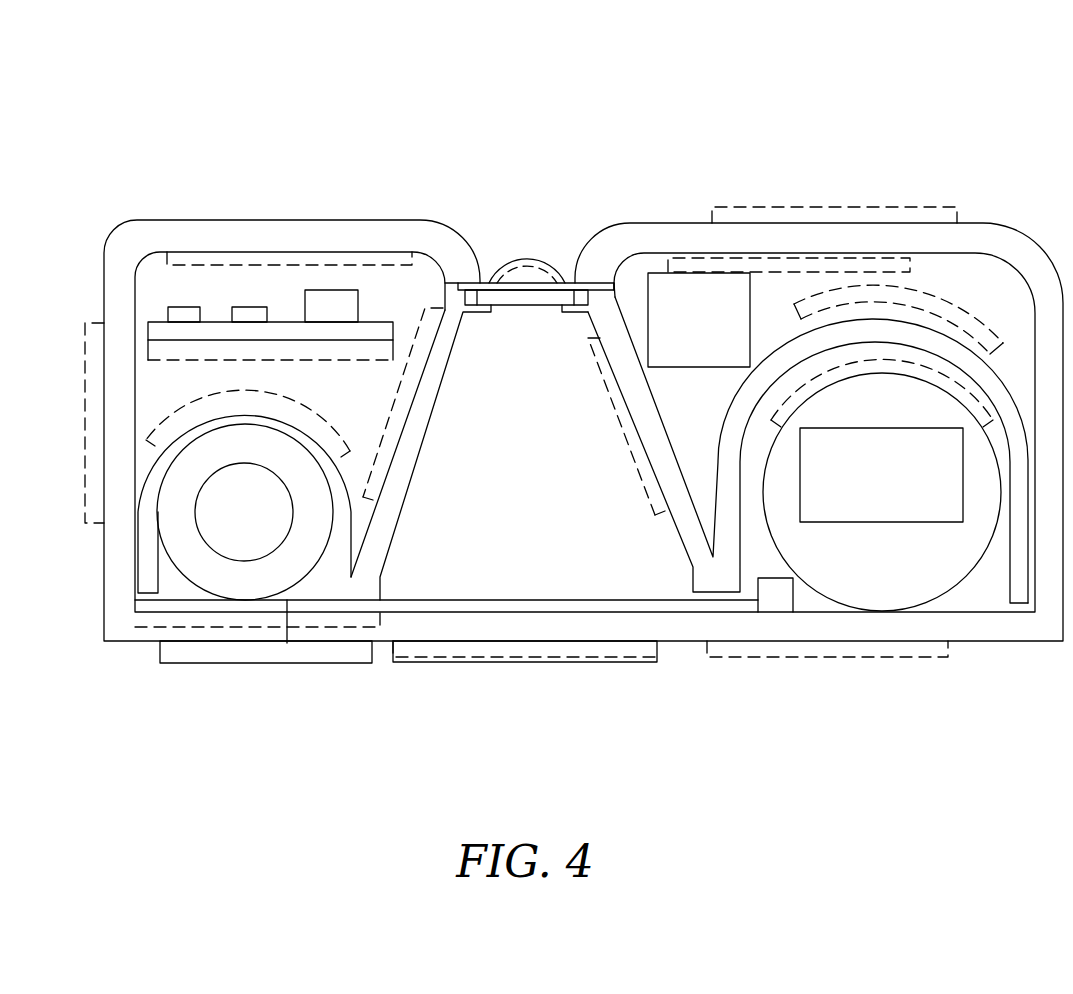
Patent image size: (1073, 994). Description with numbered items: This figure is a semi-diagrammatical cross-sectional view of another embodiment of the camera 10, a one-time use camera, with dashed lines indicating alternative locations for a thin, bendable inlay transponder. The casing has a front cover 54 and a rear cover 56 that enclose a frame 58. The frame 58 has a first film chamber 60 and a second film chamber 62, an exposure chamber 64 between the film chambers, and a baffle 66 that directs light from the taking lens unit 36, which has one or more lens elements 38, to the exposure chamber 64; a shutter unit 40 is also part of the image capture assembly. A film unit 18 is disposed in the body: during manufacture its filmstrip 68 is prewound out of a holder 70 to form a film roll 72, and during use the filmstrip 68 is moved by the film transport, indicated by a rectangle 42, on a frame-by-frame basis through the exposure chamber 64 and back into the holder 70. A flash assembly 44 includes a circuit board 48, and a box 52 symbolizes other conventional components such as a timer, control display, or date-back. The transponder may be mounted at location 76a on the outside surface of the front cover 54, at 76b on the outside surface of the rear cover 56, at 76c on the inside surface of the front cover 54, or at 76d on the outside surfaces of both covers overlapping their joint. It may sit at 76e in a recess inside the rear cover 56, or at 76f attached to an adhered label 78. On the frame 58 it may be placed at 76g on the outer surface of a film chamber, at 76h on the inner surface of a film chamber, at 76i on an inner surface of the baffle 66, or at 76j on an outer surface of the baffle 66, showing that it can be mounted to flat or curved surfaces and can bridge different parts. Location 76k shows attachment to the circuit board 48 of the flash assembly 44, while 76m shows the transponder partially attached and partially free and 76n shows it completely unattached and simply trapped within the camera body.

The camera 10 is at (138, 153).
The film unit 18 is at (956, 601).
The taking lens unit 36 is at (540, 263).
The lens element 38 is at (481, 282).
The shutter unit 40 is at (505, 308).
The film transport 42 is at (899, 490).
The flash assembly 44 is at (338, 289).
The circuit board 48 is at (213, 322).
The other conventional camera components 52 is at (647, 325).
The front cover 54 is at (1022, 230).
The rear cover 56 is at (680, 642).
The frame 58 is at (610, 282).
The first film chamber 60 is at (177, 590).
The second film chamber 62 is at (741, 543).
The exposure chamber 64 is at (380, 588).
The baffle 66 is at (438, 395).
The filmstrip 68 is at (287, 643).
The holder 70 is at (822, 598).
The film roll 72 is at (203, 530).
The inlay transponder location 76a is at (850, 207).
The inlay transponder location 76b is at (705, 652).
The inlay transponder location 76c is at (252, 265).
The inlay transponder location 76d is at (85, 505).
The inlay transponder location 76e is at (353, 627).
The inlay transponder location 76f is at (522, 657).
The inlay transponder location 76g is at (167, 417).
The inlay transponder location 76h is at (822, 377).
The inlay transponder location 76i is at (597, 372).
The inlay transponder location 76j is at (385, 430).
The inlay transponder location 76k is at (310, 360).
The inlay transponder location 76m is at (790, 300).
The inlay transponder location 76n is at (922, 272).
The adhered label 78 is at (223, 663).